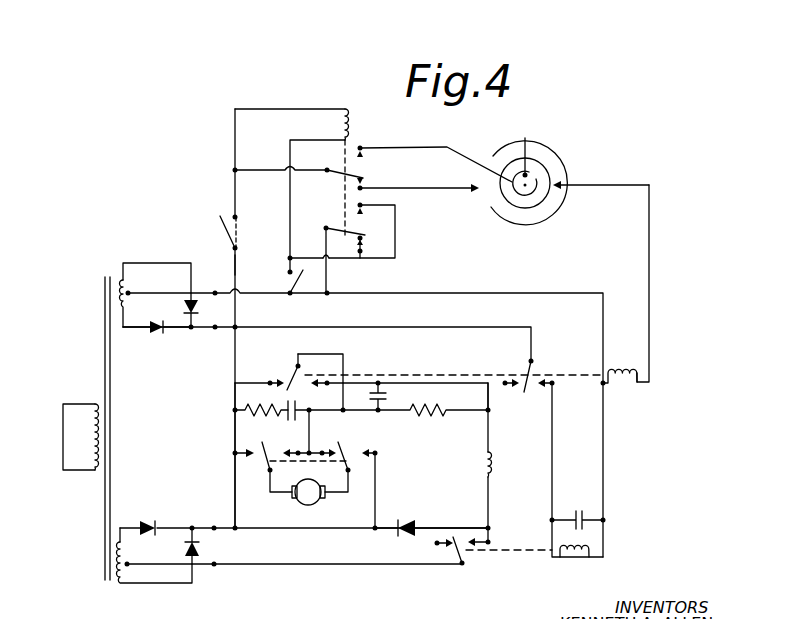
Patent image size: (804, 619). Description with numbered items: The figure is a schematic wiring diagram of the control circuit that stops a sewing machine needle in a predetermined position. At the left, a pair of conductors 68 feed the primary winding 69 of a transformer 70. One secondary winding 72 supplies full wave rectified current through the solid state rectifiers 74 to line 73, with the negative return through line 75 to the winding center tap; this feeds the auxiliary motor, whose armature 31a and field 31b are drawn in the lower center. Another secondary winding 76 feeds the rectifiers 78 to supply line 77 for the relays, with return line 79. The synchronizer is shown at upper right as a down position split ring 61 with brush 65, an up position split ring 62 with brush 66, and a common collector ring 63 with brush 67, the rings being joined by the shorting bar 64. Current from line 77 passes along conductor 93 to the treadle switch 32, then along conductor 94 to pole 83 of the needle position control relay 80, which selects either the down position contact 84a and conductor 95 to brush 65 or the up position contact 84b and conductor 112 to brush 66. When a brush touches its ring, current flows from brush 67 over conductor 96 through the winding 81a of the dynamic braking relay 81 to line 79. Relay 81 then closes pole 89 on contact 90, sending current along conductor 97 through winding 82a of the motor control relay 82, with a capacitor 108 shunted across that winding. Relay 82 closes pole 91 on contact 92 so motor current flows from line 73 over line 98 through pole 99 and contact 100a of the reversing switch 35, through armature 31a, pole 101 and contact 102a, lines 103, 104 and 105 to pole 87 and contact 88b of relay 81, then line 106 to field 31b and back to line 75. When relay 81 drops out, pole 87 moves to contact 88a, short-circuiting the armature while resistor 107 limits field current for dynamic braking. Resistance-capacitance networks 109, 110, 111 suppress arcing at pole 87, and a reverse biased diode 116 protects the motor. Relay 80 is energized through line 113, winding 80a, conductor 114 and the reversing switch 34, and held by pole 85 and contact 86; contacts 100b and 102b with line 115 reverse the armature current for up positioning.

The line 113 is at (235, 150).
The conductor 93 is at (235, 266).
The treadle switch 32 is at (228, 233).
The conductor 94 is at (260, 180).
The conductor 114 is at (290, 215).
The relay winding 80a is at (352, 118).
The needle position control relay 80 is at (343, 194).
The pole 83 is at (335, 164).
The up position contact 84b is at (366, 152).
The down position contact 84a is at (366, 186).
The conductor 112 is at (428, 146).
The conductor 95 is at (434, 192).
The contact 86 is at (362, 210).
The pole 85 is at (334, 232).
The reversing switch 34 is at (288, 283).
The line 79 is at (258, 294).
The line 77 is at (224, 332).
The transformer 70 is at (104, 334).
The secondary winding 76 is at (130, 288).
The solid state rectifiers 78 is at (186, 308).
The down position split ring 61 is at (556, 147).
The up position split ring 62 is at (549, 172).
The common collector ring 63 is at (509, 164).
The shorting bar 64 is at (527, 142).
The contact brush 65 is at (478, 194).
The contact brush 66 is at (488, 214).
The contact brush 67 is at (566, 190).
The conductor 96 is at (652, 295).
The relay winding 81a is at (625, 373).
The dynamic braking relay 81 is at (582, 372).
The pole 89 is at (529, 362).
The contact 90 is at (546, 386).
The conductor 97 is at (552, 460).
The capacitor 108 is at (573, 516).
The relay winding 82a is at (584, 558).
The motor control relay 82 is at (512, 553).
The motor field 31b is at (486, 458).
The reverse biased diode 116 is at (406, 518).
The contact 92 is at (470, 538).
The pole 91 is at (458, 563).
The line 75 is at (252, 567).
The line 73 is at (238, 534).
The solid state rectifiers 74 is at (188, 532).
The secondary winding 72 is at (128, 556).
The primary winding 69 is at (81, 437).
The conductors 68 is at (66, 468).
The line 98 is at (235, 491).
The contact 88a is at (268, 380).
The pole 87 is at (294, 372).
The contact 88b is at (320, 382).
The line 105 is at (341, 374).
The resistance-capacitance network 109 is at (261, 402).
The resistance-capacitance network 110 is at (297, 405).
The line 103 is at (311, 420).
The line 104 is at (372, 398).
The resistance-capacitance network 111 is at (388, 393).
The line 106 is at (457, 387).
The resistor 107 is at (430, 412).
The contact 100a is at (248, 451).
The pole 99 is at (266, 470).
The contact 100b is at (293, 454).
The contact 102a is at (329, 451).
The pole 101 is at (353, 460).
The contact 102b is at (370, 451).
The reversing switch 35 is at (300, 464).
The motor armature 31a is at (316, 500).
The conductor line 115 is at (378, 490).